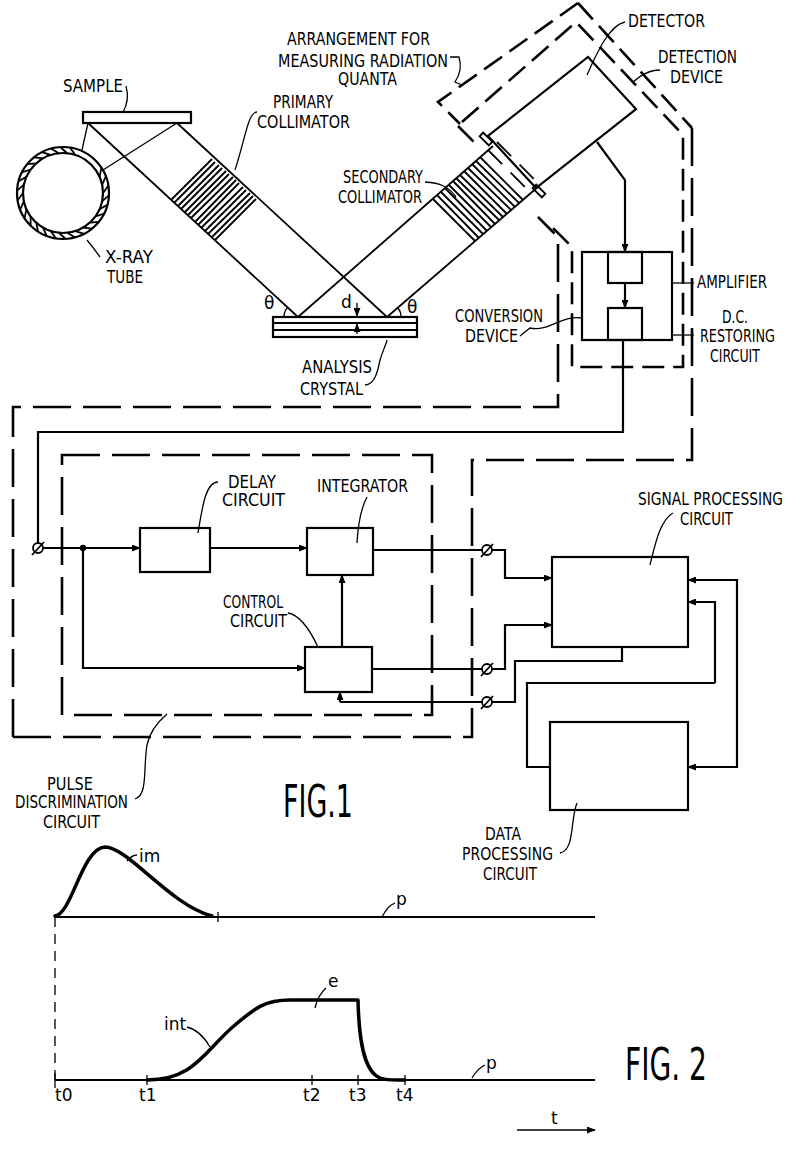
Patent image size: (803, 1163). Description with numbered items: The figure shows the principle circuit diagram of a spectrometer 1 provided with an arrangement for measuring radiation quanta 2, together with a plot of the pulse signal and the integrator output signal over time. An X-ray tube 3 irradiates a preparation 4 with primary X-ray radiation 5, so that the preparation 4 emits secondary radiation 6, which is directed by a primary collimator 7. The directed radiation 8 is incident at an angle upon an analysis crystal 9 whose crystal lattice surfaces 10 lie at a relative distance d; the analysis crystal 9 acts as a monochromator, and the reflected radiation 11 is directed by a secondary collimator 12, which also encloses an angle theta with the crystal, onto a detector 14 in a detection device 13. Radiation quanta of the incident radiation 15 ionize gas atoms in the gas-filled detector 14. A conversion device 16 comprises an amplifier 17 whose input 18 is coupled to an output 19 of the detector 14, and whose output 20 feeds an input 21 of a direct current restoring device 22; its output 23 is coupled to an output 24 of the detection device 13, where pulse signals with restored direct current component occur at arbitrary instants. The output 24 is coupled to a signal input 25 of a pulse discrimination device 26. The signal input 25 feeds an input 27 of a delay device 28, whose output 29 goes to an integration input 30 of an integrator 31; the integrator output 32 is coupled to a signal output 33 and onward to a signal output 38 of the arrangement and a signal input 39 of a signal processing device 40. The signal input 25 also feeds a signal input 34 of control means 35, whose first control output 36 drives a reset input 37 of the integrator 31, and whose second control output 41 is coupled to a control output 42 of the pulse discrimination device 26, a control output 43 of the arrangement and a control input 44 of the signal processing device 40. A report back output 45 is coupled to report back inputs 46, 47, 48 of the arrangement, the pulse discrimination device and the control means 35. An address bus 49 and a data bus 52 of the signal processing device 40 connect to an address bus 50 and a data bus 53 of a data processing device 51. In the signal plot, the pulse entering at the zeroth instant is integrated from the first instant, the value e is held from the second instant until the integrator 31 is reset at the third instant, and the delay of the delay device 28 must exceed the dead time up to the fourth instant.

The spectrometer 1 is at (192, 780).
The arrangement for measuring radiation quanta 2 is at (463, 80).
The X-ray tube 3 is at (42, 240).
The preparation 4 is at (148, 113).
The primary X-ray radiation 5 is at (82, 132).
The secondary radiation 6 is at (157, 192).
The primary collimator 7 is at (238, 172).
The directed radiation 8 is at (252, 277).
The analysis crystal 9 is at (412, 337).
The crystal lattice surfaces 10 is at (285, 336).
The reflected radiation 11 is at (427, 285).
The secondary collimator 12 is at (489, 230).
The detection device 13 is at (493, 90).
The detector 14 is at (563, 90).
The incident radiation 15 is at (518, 208).
The conversion device 16 is at (657, 252).
The amplifier 17 is at (634, 272).
The input 18 is at (622, 248).
The output 19 is at (600, 143).
The output 20 is at (622, 290).
The input 21 is at (622, 307).
The direct current restoring device 22 is at (634, 322).
The output 23 is at (625, 343).
The output 24 is at (625, 370).
The signal input 25 is at (60, 553).
The pulse discrimination device 26 is at (182, 455).
The input 27 is at (138, 547).
The delay device 28 is at (177, 533).
The output 29 is at (212, 548).
The integration input 30 is at (297, 547).
The integrator 31 is at (340, 538).
The output 32 is at (375, 550).
The signal output 33 is at (437, 550).
The signal input 34 is at (302, 662).
The control means 35 is at (355, 653).
The first control output 36 is at (334, 646).
The reset input 37 is at (345, 576).
The signal output 38 is at (481, 547).
The signal input 39 is at (550, 576).
The signal processing device 40 is at (625, 570).
The second control output 41 is at (375, 668).
The control output 42 is at (437, 670).
The control output 43 is at (478, 664).
The control input 44 is at (550, 622).
The report back output 45 is at (623, 650).
The report back input 46 is at (468, 707).
The report back input 47 is at (432, 703).
The report back input 48 is at (338, 695).
The address bus 49 is at (696, 598).
The address bus 50 is at (545, 767).
The data processing device 51 is at (617, 800).
The data bus 52 is at (695, 573).
The data bus 53 is at (693, 765).